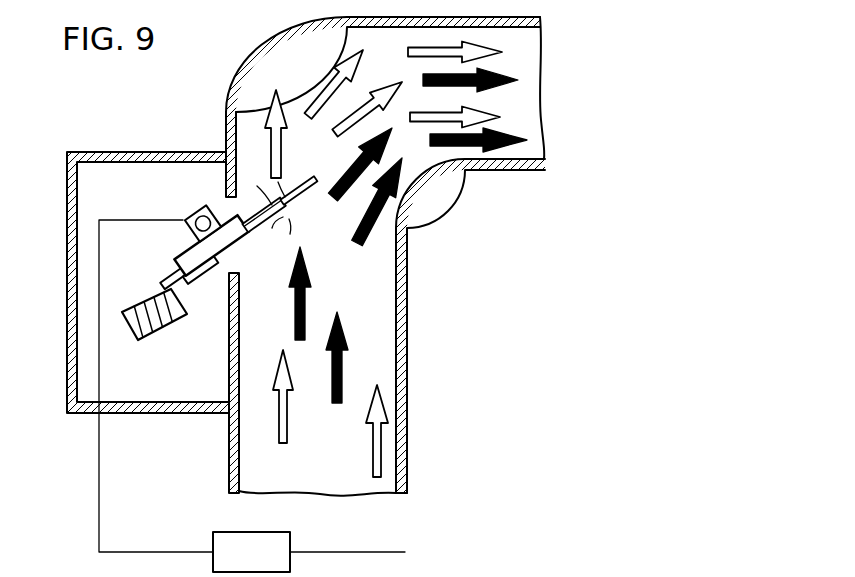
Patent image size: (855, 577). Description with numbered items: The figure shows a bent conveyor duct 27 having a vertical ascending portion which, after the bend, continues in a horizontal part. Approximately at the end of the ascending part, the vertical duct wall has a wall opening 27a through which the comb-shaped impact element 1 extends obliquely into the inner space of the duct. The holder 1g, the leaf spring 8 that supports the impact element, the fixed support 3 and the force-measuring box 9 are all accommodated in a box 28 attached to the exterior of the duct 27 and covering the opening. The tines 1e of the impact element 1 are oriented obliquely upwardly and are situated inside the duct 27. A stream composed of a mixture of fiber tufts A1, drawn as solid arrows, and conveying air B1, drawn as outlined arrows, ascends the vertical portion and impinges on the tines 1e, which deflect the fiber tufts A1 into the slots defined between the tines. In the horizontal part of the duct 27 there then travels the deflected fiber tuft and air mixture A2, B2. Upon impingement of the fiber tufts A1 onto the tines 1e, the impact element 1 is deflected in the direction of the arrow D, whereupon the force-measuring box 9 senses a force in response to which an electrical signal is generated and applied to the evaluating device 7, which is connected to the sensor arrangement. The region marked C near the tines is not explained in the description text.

The impact element 1 is at (241, 250).
The tines 1e is at (305, 180).
The holder 1g is at (182, 258).
The support 3 is at (156, 333).
The evaluating device 7 is at (222, 536).
The leaf spring 8 is at (193, 276).
The force-measuring box 9 is at (198, 214).
The conveyor duct 27 is at (408, 310).
The wall opening 27a is at (223, 199).
The box 28 is at (67, 352).
The fiber tufts A1 is at (342, 368).
The deflected fiber tufts A2 is at (462, 147).
The air B1 is at (375, 440).
The deflected air B2 is at (420, 120).
The flow separation region C is at (292, 207).
The deflection direction arrow D is at (284, 221).